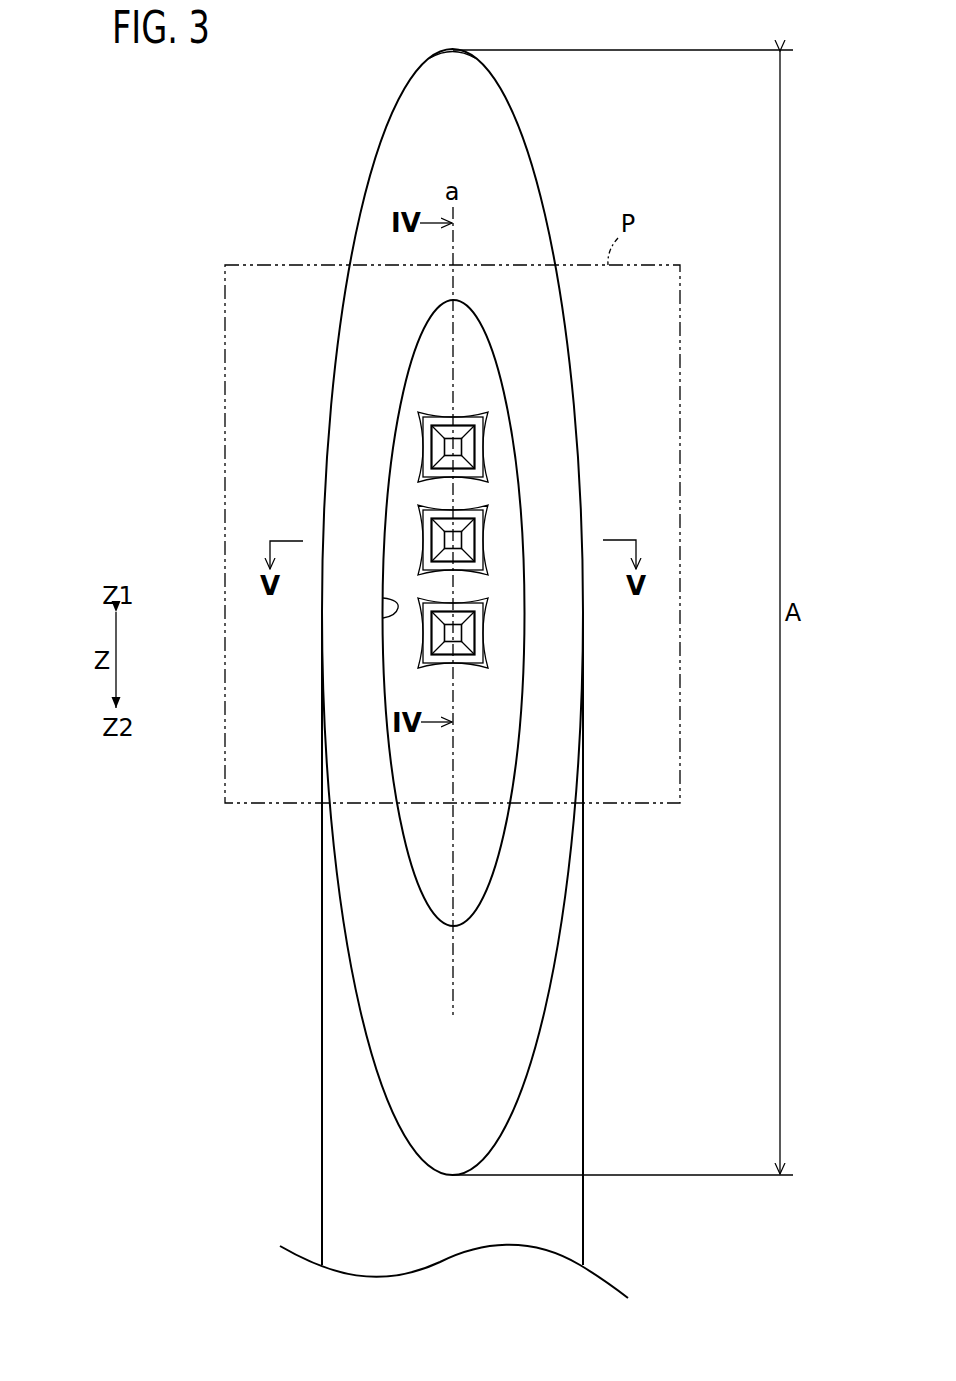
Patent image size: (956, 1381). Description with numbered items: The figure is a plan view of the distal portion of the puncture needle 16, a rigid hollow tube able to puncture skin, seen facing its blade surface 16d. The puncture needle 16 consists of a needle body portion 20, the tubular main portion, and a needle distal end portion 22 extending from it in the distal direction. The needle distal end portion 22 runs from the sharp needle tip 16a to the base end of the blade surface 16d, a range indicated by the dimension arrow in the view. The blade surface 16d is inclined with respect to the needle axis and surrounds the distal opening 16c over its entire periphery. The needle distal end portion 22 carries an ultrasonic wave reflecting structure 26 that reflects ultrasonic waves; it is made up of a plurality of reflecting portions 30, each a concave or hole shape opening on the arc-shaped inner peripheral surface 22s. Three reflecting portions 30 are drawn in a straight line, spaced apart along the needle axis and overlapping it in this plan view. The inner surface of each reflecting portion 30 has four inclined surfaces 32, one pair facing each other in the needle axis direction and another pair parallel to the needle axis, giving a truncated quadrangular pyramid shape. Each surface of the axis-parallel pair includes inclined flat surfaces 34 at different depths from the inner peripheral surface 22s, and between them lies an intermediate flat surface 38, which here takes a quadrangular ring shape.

The puncture needle 16 is at (166, 130).
The needle tip 16a is at (452, 48).
The distal opening 16c is at (388, 608).
The blade surface 16d is at (346, 672).
The needle body portion 20 is at (321, 1200).
The needle distal end portion 22 is at (367, 168).
The inner peripheral surface 22s is at (502, 712).
The ultrasonic wave reflecting structure 26 is at (483, 398).
The reflecting portion 30 is at (432, 440).
The inclined surface 32 is at (607, 455).
The inclined flat surface 34 is at (300, 516).
The intermediate flat surface 38 is at (436, 452).